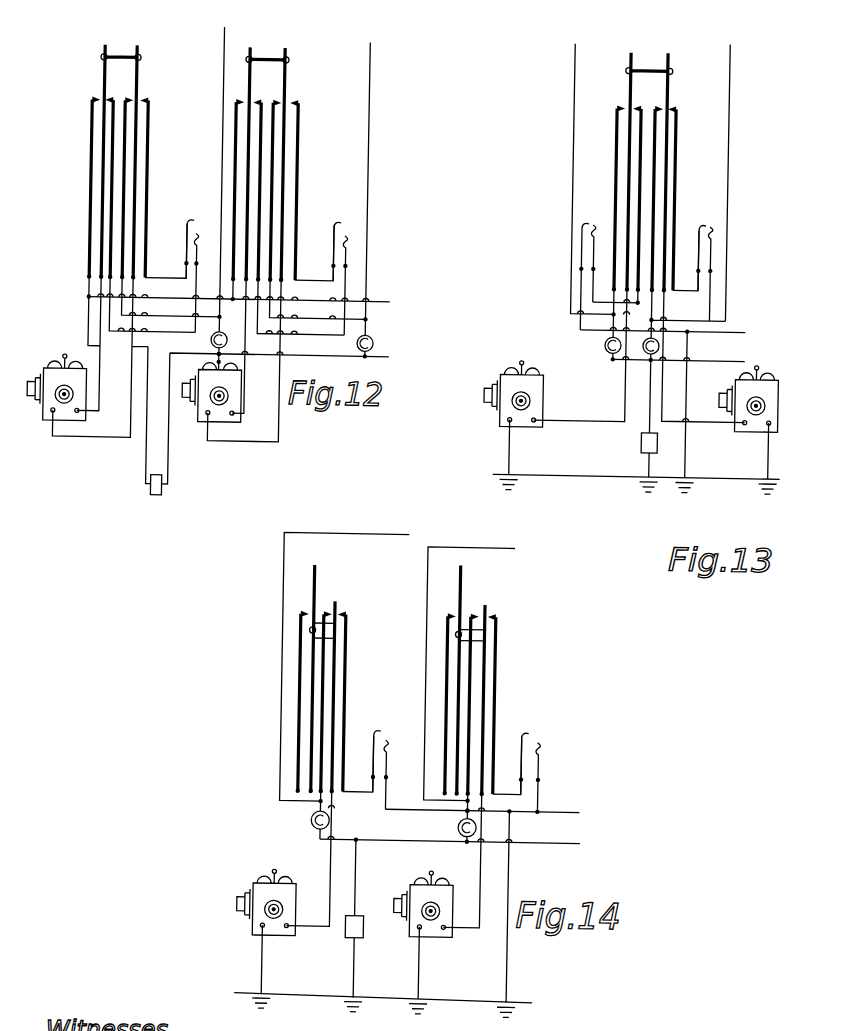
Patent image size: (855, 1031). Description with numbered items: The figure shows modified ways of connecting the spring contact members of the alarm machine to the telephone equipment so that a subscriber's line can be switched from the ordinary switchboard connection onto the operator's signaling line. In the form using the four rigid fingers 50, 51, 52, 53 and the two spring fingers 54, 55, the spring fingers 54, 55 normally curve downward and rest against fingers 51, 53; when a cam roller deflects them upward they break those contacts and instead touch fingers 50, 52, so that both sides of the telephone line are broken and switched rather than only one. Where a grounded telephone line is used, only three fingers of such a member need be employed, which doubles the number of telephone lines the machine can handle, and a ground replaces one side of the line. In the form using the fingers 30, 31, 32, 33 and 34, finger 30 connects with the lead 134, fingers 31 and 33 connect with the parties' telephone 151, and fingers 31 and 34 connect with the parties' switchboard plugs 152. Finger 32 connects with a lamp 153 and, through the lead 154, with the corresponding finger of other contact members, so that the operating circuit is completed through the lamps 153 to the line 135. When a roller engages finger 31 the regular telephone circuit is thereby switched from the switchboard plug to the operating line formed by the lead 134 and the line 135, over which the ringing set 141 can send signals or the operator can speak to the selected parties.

In FIG. 14, the finger 30 is at (290, 607).
In FIG. 14, the finger 31 is at (303, 640).
In FIG. 14, the finger 32 is at (313, 657).
In FIG. 14, the finger 33 is at (324, 678).
In FIG. 14, the finger 34 is at (335, 695).
In FIG. 12, the rigid finger 50 is at (81, 110).
In FIG. 13, the rigid finger 50 is at (606, 121).
In FIG. 12, the rigid finger 51 is at (102, 127).
In FIG. 13, the rigid finger 51 is at (630, 142).
In FIG. 12, the rigid finger 52 is at (114, 150).
In FIG. 13, the rigid finger 52 is at (648, 118).
In FIG. 12, the rigid finger 53 is at (137, 170).
In FIG. 13, the rigid finger 53 is at (670, 141).
In FIG. 12, the spring finger 54 is at (93, 70).
In FIG. 13, the spring finger 54 is at (619, 76).
In FIG. 12, the spring finger 55 is at (132, 65).
In FIG. 13, the spring finger 55 is at (660, 76).
In FIG. 12, the lead 134 is at (382, 291).
In FIG. 13, the lead 134 is at (748, 315).
In FIG. 14, the lead 134 is at (570, 802).
In FIG. 12, the line 135 is at (382, 346).
In FIG. 13, the line 135 is at (735, 352).
In FIG. 14, the line 135 is at (548, 837).
In FIG. 12, the ringing set 141 is at (147, 488).
In FIG. 13, the ringing set 141 is at (628, 435).
In FIG. 14, the ringing set 141 is at (338, 918).
In FIG. 12, the parties' telephone 151 is at (55, 362).
In FIG. 13, the parties' telephone 151 is at (505, 375).
In FIG. 14, the parties' telephone 151 is at (255, 885).
In FIG. 12, the switchboard plugs 152 is at (190, 209).
In FIG. 13, the switchboard plugs 152 is at (589, 212).
In FIG. 14, the switchboard plugs 152 is at (378, 727).
In FIG. 12, the lamp 153 is at (204, 332).
In FIG. 13, the lamp 153 is at (598, 340).
In FIG. 14, the lamp 153 is at (304, 812).
In FIG. 12, the lead 154 is at (212, 104).
In FIG. 13, the lead 154 is at (565, 66).
In FIG. 14, the lead 154 is at (322, 525).